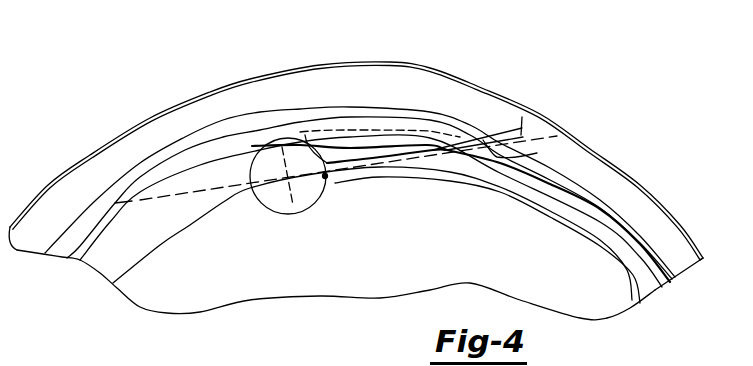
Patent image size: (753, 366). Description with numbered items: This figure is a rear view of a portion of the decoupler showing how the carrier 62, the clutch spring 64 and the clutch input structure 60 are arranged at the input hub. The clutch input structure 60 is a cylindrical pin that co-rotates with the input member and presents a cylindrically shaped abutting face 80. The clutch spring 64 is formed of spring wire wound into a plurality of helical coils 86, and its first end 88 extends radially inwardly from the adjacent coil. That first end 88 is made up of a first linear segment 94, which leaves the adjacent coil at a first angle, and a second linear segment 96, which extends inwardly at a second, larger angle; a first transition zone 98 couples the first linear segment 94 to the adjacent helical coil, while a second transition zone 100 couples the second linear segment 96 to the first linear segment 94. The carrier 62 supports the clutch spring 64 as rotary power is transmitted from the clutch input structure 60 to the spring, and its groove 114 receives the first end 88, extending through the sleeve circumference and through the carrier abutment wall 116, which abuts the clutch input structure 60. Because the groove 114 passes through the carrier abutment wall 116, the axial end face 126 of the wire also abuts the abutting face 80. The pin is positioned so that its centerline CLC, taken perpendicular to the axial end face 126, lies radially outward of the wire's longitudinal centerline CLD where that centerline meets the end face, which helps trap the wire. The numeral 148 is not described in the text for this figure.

The clutch input structure 60 is at (272, 209).
The carrier 62 is at (191, 196).
The clutch spring 64 is at (660, 281).
The abutting face 80 is at (299, 212).
The helical coils 86 is at (640, 250).
The first end 88 is at (472, 167).
The first linear segment 94 is at (550, 190).
The second linear segment 96 is at (380, 167).
The first transition zone 98 is at (600, 223).
The second transition zone 100 is at (420, 165).
The groove 114 is at (450, 173).
The carrier abutment wall 116 is at (305, 135).
The axial end face 126 is at (326, 179).
The vehicle 148 is at (210, 360).
The centerline of the clutch input structure CLC is at (530, 110).
The longitudinal centerline of the wire CLD is at (557, 138).